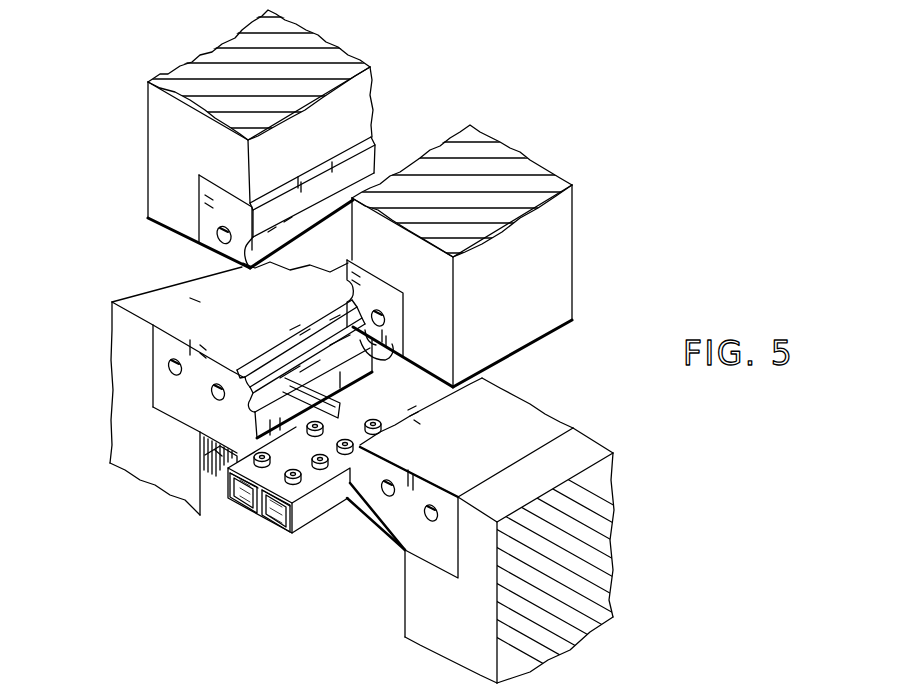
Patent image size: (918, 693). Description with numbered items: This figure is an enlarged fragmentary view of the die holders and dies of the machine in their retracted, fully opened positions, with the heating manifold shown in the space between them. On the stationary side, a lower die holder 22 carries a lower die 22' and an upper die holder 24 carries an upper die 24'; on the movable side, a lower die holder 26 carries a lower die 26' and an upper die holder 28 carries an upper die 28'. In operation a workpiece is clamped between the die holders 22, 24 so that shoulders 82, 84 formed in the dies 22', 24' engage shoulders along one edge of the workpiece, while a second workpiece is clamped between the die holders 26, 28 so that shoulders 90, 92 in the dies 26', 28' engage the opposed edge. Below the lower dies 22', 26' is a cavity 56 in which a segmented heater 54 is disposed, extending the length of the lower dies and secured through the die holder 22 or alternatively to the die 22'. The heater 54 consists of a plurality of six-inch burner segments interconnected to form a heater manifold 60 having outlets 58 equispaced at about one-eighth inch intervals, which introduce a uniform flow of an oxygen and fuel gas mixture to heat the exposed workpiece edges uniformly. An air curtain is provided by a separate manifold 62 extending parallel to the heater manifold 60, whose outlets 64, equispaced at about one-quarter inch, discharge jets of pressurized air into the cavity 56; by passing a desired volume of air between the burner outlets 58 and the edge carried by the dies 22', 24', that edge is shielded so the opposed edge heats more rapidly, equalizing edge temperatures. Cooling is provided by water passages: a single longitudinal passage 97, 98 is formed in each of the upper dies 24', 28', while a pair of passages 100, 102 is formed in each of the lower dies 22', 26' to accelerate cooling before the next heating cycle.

The die holder 22 is at (199, 388).
The lower die 22' is at (148, 275).
The upper die holder 24 is at (236, 139).
The upper die 24' is at (173, 212).
The die holder 26 is at (523, 553).
The lower die 26' is at (469, 478).
The upper die holder 28 is at (471, 256).
The upper die 28' is at (398, 308).
The segmented heater 54 is at (262, 520).
The cavity 56 is at (316, 504).
The outlets 58 is at (301, 476).
The heater manifold 60 is at (280, 515).
The air manifold 62 is at (250, 497).
The air outlets 64 is at (343, 406).
The shoulder 82 is at (416, 420).
The shoulder 84 is at (400, 352).
The shoulder 90 is at (235, 366).
The shoulder 92 is at (238, 272).
The water passage 97 is at (216, 238).
The water passage 98 is at (384, 325).
The water passages 100 is at (210, 397).
The water passages 102 is at (430, 522).